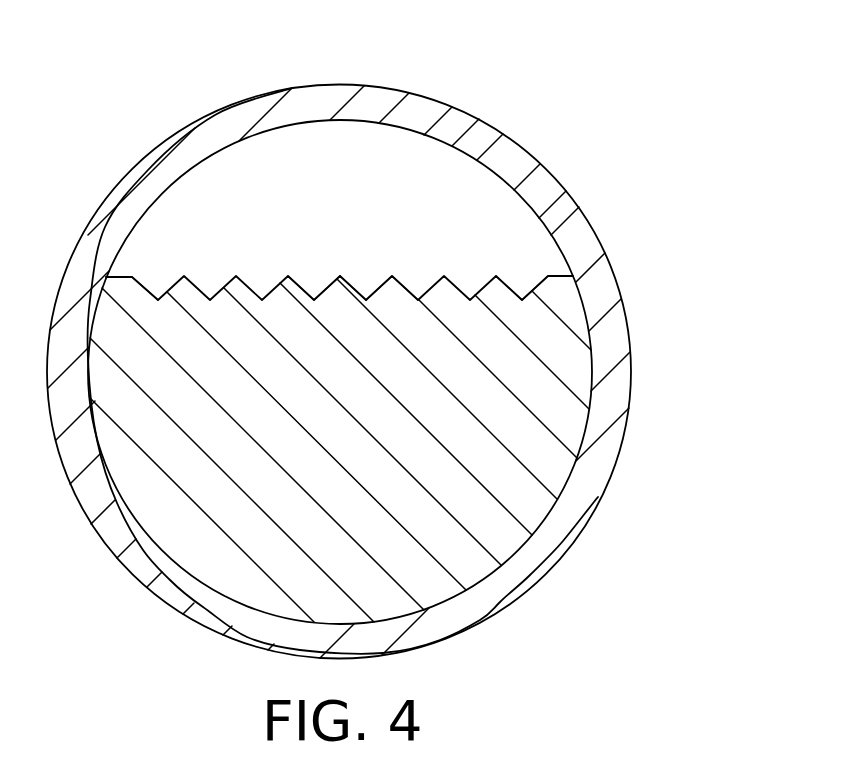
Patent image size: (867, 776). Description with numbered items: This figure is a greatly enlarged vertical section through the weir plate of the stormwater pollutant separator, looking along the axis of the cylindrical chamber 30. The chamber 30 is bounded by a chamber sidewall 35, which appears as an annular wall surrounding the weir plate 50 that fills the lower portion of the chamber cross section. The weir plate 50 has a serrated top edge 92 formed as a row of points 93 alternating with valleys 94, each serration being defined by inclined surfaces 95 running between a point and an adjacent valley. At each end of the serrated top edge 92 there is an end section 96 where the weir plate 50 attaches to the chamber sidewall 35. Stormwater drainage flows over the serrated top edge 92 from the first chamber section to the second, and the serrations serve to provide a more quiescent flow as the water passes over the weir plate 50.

The chamber 30 is at (627, 228).
The chamber sidewall 35 is at (613, 320).
The weir plate 50 is at (555, 409).
The serrated top edge 92 is at (352, 270).
The points 93 is at (392, 277).
The valleys 94 is at (315, 300).
The inclined surfaces 95 is at (512, 280).
The end sections 96 is at (120, 277).